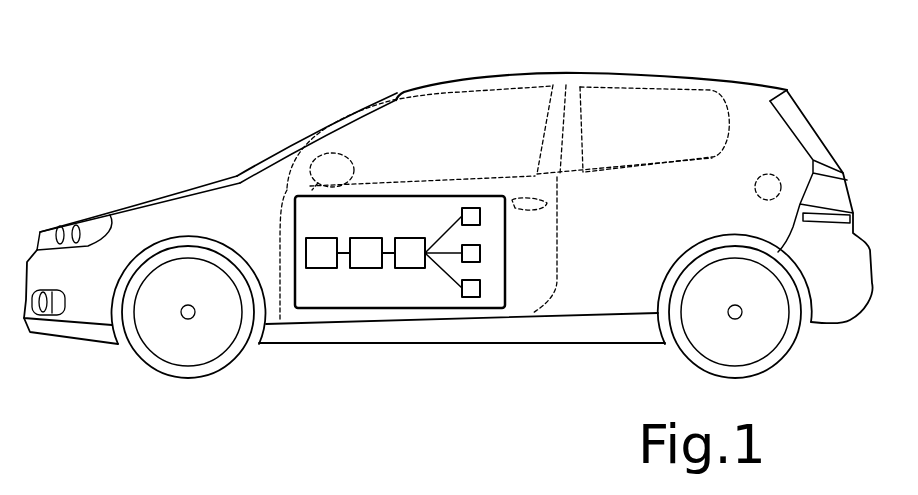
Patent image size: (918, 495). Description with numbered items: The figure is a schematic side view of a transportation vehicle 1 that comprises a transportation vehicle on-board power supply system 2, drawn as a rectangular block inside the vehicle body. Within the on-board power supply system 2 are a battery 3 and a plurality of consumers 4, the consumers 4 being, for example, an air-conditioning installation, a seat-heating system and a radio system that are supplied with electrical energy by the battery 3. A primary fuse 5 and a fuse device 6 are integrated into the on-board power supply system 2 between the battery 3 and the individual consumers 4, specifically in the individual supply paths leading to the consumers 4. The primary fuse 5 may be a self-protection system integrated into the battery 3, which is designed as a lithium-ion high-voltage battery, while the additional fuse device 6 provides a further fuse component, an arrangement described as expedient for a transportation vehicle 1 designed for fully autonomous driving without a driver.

The transportation vehicle 1 is at (649, 59).
The transportation vehicle on-board power supply system 2 is at (446, 180).
The battery 3 is at (318, 268).
The consumers 4 is at (480, 216).
The primary fuse 5 is at (362, 268).
The fuse device 6 is at (408, 268).